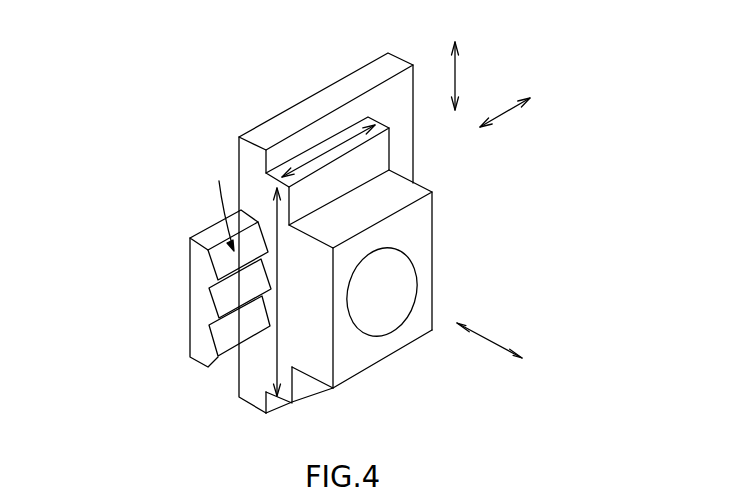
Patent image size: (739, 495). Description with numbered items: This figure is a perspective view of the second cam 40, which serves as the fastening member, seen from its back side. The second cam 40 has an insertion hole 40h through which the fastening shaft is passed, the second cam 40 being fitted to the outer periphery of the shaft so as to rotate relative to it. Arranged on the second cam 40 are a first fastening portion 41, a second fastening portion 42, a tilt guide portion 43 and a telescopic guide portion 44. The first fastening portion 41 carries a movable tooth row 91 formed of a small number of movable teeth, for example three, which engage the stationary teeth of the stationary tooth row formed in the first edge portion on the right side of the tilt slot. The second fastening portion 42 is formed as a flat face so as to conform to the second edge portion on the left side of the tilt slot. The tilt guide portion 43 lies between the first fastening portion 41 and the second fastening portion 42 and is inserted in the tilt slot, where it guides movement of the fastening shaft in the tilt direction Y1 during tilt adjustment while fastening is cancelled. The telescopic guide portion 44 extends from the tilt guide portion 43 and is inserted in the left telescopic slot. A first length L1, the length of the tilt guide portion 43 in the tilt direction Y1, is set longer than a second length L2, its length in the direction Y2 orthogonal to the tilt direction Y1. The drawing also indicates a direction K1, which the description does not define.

The second cam 40 is at (364, 233).
The insertion hole 40h is at (381, 314).
The first fastening portion 41 is at (208, 263).
The second fastening portion 42 is at (405, 143).
The tilt guide portion 43 is at (378, 155).
The telescopic guide portion 44 is at (389, 283).
The movable tooth row 91 is at (204, 235).
The first length L1 is at (277, 365).
The second length L2 is at (320, 155).
The tilt direction Y1 is at (456, 72).
The direction orthogonal to the tilt direction Y2 is at (510, 113).
The depth direction K1 is at (490, 340).